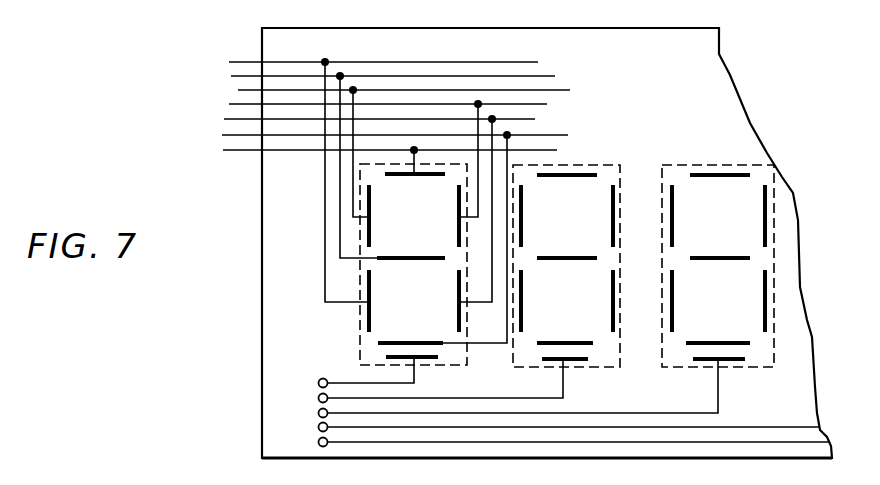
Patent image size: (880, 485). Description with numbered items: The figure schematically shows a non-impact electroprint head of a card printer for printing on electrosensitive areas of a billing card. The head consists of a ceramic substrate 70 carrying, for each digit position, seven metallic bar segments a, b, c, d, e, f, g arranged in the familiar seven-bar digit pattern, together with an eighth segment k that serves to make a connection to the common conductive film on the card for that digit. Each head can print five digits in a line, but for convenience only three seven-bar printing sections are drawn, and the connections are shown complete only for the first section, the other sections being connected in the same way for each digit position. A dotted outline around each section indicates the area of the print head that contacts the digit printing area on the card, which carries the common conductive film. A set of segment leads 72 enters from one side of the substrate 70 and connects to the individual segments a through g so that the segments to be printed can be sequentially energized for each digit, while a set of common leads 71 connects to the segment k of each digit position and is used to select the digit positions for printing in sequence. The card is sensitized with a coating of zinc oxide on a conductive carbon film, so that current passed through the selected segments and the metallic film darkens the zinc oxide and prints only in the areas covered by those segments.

The ceramic substrate 70 is at (276, 293).
The common leads 71 is at (316, 452).
The segment leads 72 is at (215, 158).
The metallic segment a is at (414, 176).
The metallic segment b is at (457, 216).
The metallic segment c is at (457, 312).
The metallic segment d is at (378, 343).
The metallic segment e is at (371, 311).
The metallic segment f is at (371, 236).
The metallic segment g is at (414, 260).
The eighth segment k is at (428, 358).